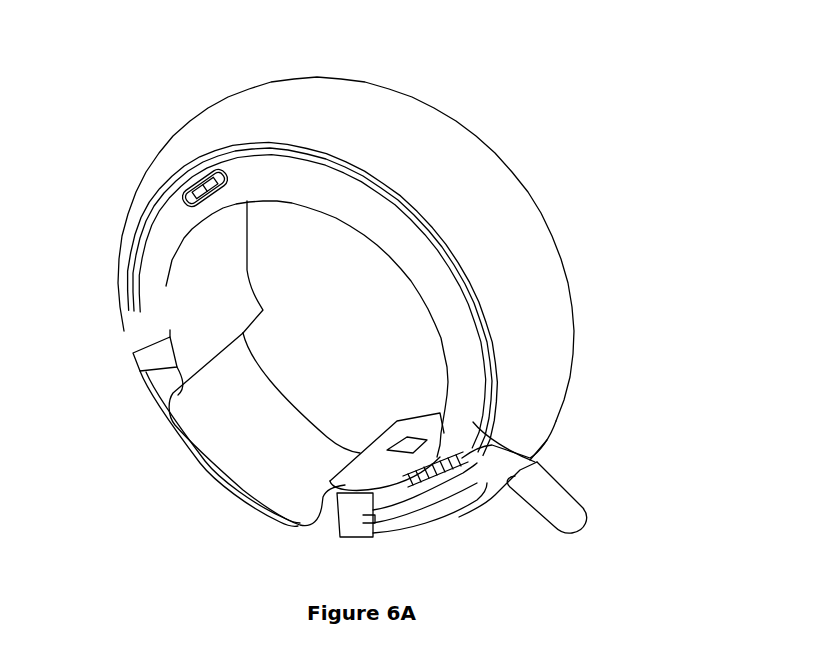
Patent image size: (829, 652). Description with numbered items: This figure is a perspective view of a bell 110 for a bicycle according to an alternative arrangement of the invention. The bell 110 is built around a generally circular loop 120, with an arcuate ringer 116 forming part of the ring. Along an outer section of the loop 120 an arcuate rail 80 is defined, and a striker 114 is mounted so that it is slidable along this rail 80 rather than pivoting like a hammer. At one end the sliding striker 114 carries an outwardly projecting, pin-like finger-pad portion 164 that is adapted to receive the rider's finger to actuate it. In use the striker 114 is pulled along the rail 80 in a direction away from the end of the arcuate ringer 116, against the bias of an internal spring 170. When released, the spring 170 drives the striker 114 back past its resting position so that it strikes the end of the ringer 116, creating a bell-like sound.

The bell 110 is at (499, 93).
The arcuate ringer 116 is at (533, 240).
The generally circular loop 120 is at (173, 323).
The arcuate rail 80 is at (363, 523).
The internal spring 170 is at (410, 481).
The striker 114 is at (481, 507).
The finger-pad portion 164 is at (577, 517).